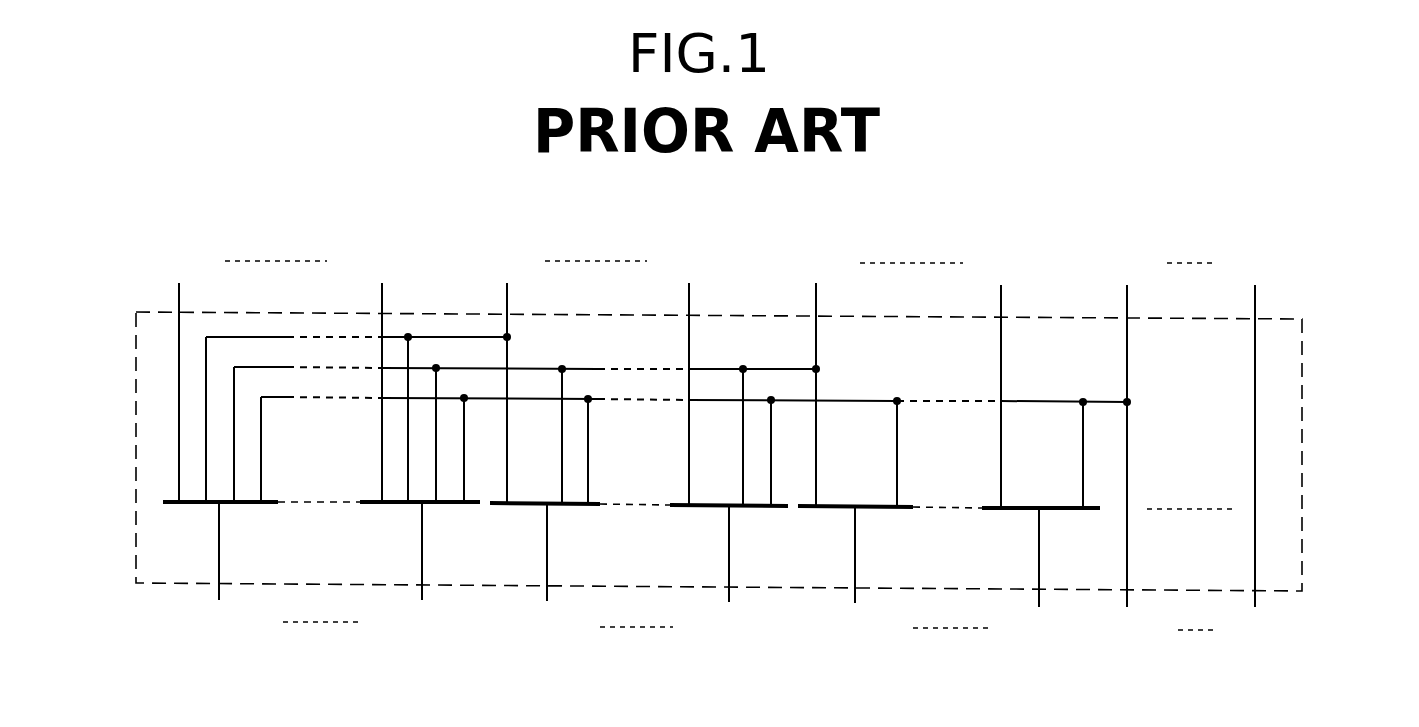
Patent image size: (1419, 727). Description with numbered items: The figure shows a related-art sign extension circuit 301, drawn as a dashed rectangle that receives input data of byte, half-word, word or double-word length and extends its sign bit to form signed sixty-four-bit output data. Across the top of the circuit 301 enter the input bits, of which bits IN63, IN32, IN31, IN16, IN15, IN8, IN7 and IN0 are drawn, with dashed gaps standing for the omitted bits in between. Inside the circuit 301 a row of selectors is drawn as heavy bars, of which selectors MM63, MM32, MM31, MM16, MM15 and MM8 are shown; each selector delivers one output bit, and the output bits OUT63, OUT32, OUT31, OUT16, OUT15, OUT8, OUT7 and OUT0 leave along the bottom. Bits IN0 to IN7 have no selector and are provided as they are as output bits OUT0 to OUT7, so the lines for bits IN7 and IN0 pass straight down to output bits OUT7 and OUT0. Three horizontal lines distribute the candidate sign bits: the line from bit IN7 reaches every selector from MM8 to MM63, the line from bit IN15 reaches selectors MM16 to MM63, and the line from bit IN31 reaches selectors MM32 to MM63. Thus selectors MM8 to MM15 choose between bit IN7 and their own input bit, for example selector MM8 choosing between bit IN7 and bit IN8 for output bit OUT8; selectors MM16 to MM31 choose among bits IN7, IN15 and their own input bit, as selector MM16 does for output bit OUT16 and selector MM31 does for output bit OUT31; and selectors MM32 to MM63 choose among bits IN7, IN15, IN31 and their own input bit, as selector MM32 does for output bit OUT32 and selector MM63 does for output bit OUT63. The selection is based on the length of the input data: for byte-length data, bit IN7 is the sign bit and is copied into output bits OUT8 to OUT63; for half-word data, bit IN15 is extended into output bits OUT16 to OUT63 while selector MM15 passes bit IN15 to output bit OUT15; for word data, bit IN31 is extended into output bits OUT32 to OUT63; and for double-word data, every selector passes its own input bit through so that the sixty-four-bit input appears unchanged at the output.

The sign extension circuit 301 is at (1302, 475).
The selector MM63 is at (248, 505).
The selector MM32 is at (450, 505).
The selector MM31 is at (578, 506).
The selector MM16 is at (760, 508).
The selector MM15 is at (882, 509).
The selector MM8 is at (1018, 510).
The input bit IN63 is at (177, 374).
The input bit IN32 is at (381, 374).
The input bit IN31 is at (506, 375).
The input bit IN16 is at (689, 376).
The input bit IN15 is at (815, 377).
The input bit IN8 is at (1001, 378).
The input bit IN7 is at (1127, 428).
The input bit IN0 is at (1256, 428).
The output bit OUT63 is at (219, 570).
The output bit OUT32 is at (422, 570).
The output bit OUT31 is at (549, 572).
The output bit OUT16 is at (730, 574).
The output bit OUT15 is at (855, 575).
The output bit OUT8 is at (1040, 577).
The output bit OUT7 is at (1135, 630).
The output bit OUT0 is at (1259, 630).